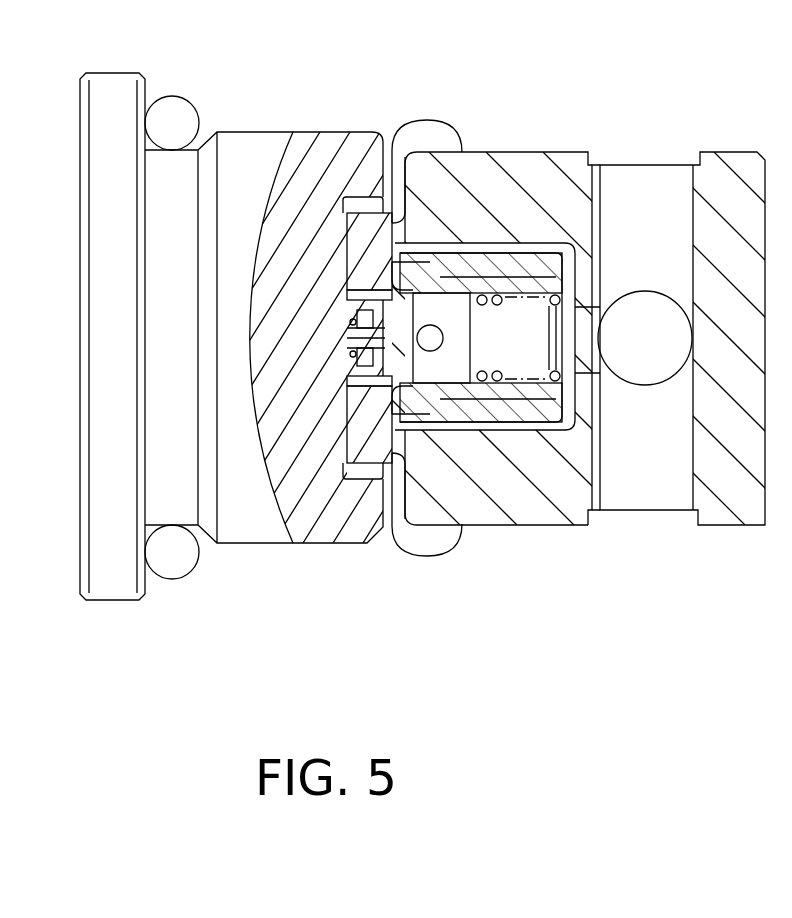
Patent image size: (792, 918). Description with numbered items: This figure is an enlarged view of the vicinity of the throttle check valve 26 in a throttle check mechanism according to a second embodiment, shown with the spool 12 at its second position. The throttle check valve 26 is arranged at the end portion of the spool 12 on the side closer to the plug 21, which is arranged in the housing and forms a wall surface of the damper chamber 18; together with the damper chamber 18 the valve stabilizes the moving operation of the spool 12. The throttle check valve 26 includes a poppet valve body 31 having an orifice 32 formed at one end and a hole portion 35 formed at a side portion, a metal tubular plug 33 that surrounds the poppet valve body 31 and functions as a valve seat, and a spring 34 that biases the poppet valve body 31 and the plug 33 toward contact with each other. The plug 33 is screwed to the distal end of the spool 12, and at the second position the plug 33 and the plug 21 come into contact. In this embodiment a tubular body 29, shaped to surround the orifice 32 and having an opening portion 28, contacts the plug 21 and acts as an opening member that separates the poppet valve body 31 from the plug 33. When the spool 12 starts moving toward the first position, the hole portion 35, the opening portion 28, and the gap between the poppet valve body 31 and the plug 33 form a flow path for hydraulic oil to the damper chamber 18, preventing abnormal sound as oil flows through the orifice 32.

The spool 12 is at (552, 512).
The damper chamber 18 is at (430, 125).
The plug 21 is at (250, 538).
The throttle check valve 26 is at (423, 253).
The opening portion 28 is at (365, 300).
The tubular body 29 is at (328, 432).
The poppet valve body 31 is at (520, 512).
The orifice 32 is at (345, 345).
The plug 33 is at (362, 237).
The spring 34 is at (495, 300).
The hole portion 35 is at (485, 226).